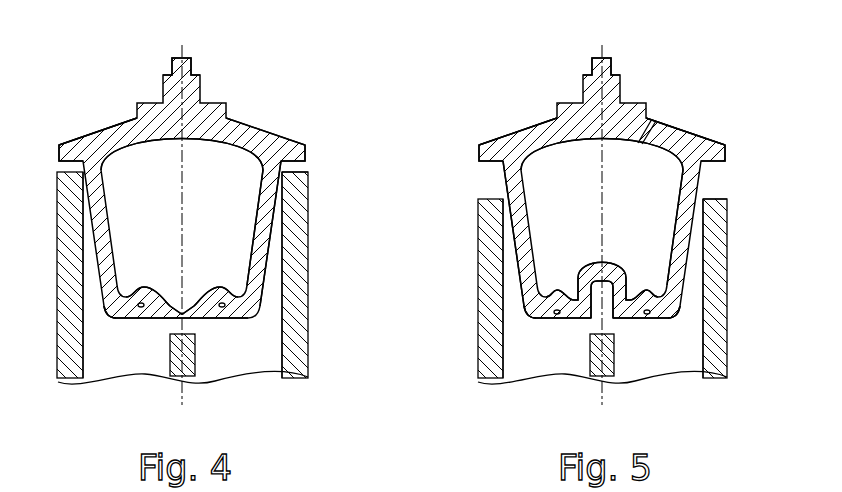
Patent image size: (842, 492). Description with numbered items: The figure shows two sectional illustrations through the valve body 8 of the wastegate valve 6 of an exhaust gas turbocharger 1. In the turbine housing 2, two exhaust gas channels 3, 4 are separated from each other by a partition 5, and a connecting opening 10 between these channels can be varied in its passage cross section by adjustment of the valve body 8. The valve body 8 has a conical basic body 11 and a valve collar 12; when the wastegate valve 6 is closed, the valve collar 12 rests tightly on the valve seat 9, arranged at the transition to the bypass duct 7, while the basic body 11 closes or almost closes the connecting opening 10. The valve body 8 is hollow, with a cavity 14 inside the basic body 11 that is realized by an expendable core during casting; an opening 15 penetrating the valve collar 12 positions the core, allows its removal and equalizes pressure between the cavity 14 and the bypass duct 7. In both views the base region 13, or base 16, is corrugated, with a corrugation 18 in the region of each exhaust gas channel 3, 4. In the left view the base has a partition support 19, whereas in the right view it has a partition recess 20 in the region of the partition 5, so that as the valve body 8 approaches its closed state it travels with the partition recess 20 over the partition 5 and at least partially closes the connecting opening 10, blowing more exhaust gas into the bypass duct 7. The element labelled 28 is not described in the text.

In FIG. 4, the exhaust gas turbocharger 1 is at (38, 125).
In FIG. 4, the turbine housing 2 is at (52, 261).
In FIG. 5, the turbine housing 2 is at (731, 245).
In FIG. 4, the exhaust gas channel 3 is at (242, 356).
In FIG. 5, the exhaust gas channel 3 is at (634, 368).
In FIG. 4, the exhaust gas channel 4 is at (100, 356).
In FIG. 5, the exhaust gas channel 4 is at (535, 368).
In FIG. 4, the partition 5 is at (177, 372).
In FIG. 5, the partition 5 is at (598, 363).
In FIG. 4, the wastegate valve 6 is at (268, 80).
In FIG. 5, the wastegate valve 6 is at (676, 81).
In FIG. 4, the bypass duct 7 is at (235, 75).
In FIG. 5, the bypass duct 7 is at (498, 121).
In FIG. 4, the valve body 8 is at (93, 109).
In FIG. 5, the valve body 8 is at (556, 91).
In FIG. 4, the valve seat 9 is at (298, 169).
In FIG. 5, the valve seat 9 is at (721, 196).
In FIG. 4, the connecting opening 10 is at (192, 325).
In FIG. 5, the connecting opening 10 is at (592, 325).
In FIG. 4, the basic body 11 is at (272, 190).
In FIG. 5, the basic body 11 is at (517, 212).
In FIG. 4, the valve collar 12 is at (269, 142).
In FIG. 5, the valve collar 12 is at (726, 153).
In FIG. 4, the base region 13 is at (135, 341).
In FIG. 5, the base region 13 is at (545, 338).
In FIG. 4, the cavity 14 is at (134, 186).
In FIG. 5, the cavity 14 is at (642, 193).
In FIG. 5, the opening 15 is at (660, 117).
In FIG. 4, the base 16 is at (135, 341).
In FIG. 5, the base 16 is at (545, 338).
In FIG. 4, the corrugation 18 is at (145, 288).
In FIG. 5, the corrugation 18 is at (558, 307).
In FIG. 4, the partition support 19 is at (186, 305).
In FIG. 5, the partition recess 20 is at (597, 282).
In FIG. 4, the pin head 28 is at (193, 62).
In FIG. 5, the pin head 28 is at (612, 64).